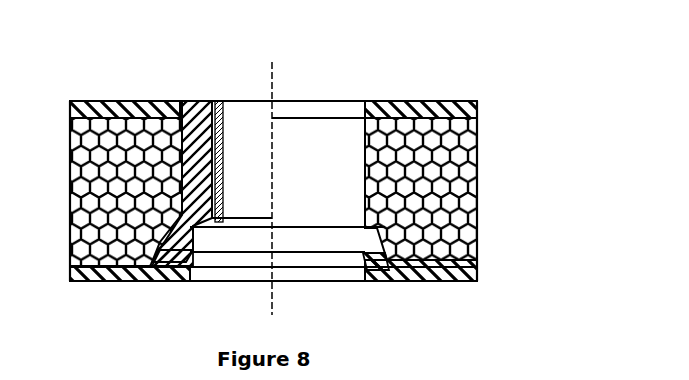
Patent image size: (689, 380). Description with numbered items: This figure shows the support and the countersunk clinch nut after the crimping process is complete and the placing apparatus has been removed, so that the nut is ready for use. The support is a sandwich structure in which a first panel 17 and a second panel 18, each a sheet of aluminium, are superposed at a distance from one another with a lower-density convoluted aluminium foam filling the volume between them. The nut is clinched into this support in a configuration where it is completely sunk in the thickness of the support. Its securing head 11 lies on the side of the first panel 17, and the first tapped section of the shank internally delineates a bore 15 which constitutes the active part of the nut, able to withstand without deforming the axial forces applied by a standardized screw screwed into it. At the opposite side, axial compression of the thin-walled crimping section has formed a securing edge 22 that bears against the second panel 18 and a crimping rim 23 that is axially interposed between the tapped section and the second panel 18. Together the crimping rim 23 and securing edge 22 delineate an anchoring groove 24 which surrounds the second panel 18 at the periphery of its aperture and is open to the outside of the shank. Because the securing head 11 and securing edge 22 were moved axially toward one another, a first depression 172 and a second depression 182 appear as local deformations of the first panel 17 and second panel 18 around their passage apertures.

The securing head 11 is at (318, 112).
The bore 15 is at (223, 132).
The first panel 17 is at (88, 112).
The first depression 172 is at (382, 123).
The second panel 18 is at (92, 283).
The second depression 182 is at (167, 270).
The securing edge 22 is at (338, 280).
The crimping rim 23 is at (348, 243).
The anchoring groove 24 is at (337, 266).